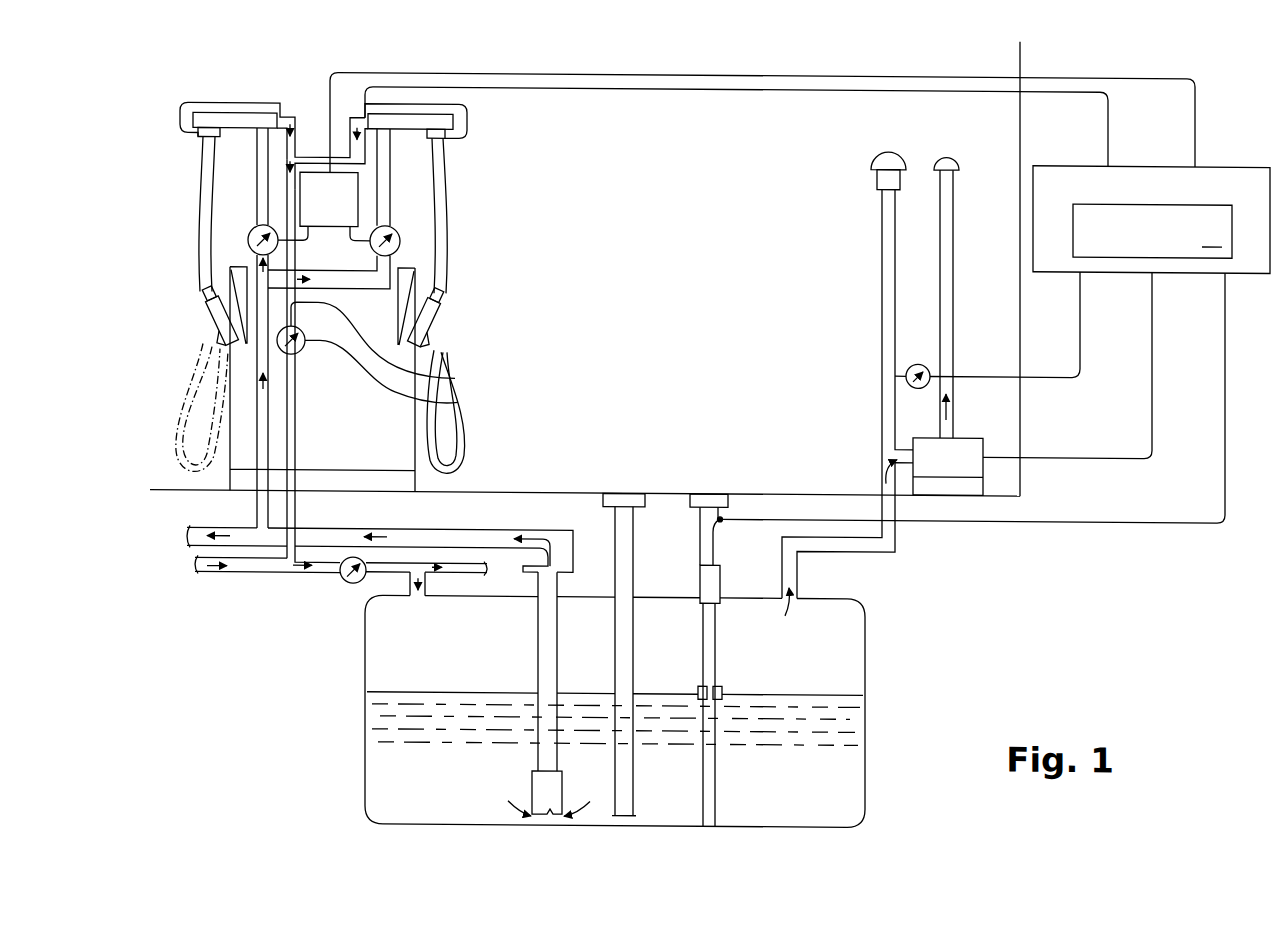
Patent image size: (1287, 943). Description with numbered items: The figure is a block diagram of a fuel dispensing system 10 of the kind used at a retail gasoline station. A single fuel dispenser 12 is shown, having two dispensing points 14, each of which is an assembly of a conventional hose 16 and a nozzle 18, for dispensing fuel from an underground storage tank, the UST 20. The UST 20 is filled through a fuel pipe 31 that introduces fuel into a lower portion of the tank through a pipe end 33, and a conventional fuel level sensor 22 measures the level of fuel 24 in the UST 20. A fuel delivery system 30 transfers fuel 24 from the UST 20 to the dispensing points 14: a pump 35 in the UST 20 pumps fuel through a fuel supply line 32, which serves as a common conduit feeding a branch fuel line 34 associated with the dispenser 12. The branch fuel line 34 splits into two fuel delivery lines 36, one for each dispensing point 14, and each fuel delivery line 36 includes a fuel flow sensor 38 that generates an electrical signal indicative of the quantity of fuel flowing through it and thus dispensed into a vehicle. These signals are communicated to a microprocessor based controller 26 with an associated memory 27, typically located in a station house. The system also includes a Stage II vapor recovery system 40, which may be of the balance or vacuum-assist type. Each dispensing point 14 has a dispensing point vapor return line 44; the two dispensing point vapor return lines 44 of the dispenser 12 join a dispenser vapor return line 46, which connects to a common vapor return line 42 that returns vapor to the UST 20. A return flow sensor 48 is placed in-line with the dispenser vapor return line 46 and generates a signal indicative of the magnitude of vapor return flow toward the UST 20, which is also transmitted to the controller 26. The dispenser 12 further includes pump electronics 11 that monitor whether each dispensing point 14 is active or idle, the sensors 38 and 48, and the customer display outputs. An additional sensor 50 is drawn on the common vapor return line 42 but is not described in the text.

The fuel dispensing system 10 is at (205, 623).
The pump electronics 11 is at (316, 211).
The fuel dispenser 12 is at (270, 104).
The dispensing point 14 is at (230, 272).
The hose 16 is at (195, 367).
The nozzle 18 is at (215, 313).
The UST 20 is at (867, 668).
The fuel level sensor 22 is at (717, 684).
The fuel 24 is at (806, 774).
The controller 26 is at (1213, 161).
The memory 27 is at (1152, 231).
The fuel delivery system 30 is at (544, 525).
The fuel pipe 31 is at (624, 492).
The fuel supply line 32 is at (440, 528).
The pipe end 33 is at (627, 815).
The branch fuel line 34 is at (255, 527).
The pump 35 is at (542, 814).
The fuel delivery line 36 is at (255, 404).
The fuel flow sensor 38 is at (247, 241).
The vapor recovery system 40 is at (303, 589).
The common vapor return line 42 is at (395, 562).
The dispensing point vapor return line 44 is at (300, 130).
The dispenser vapor return line 46 is at (458, 378).
The return flow sensor 48 is at (460, 401).
The vapor flow sensor 50 is at (347, 582).